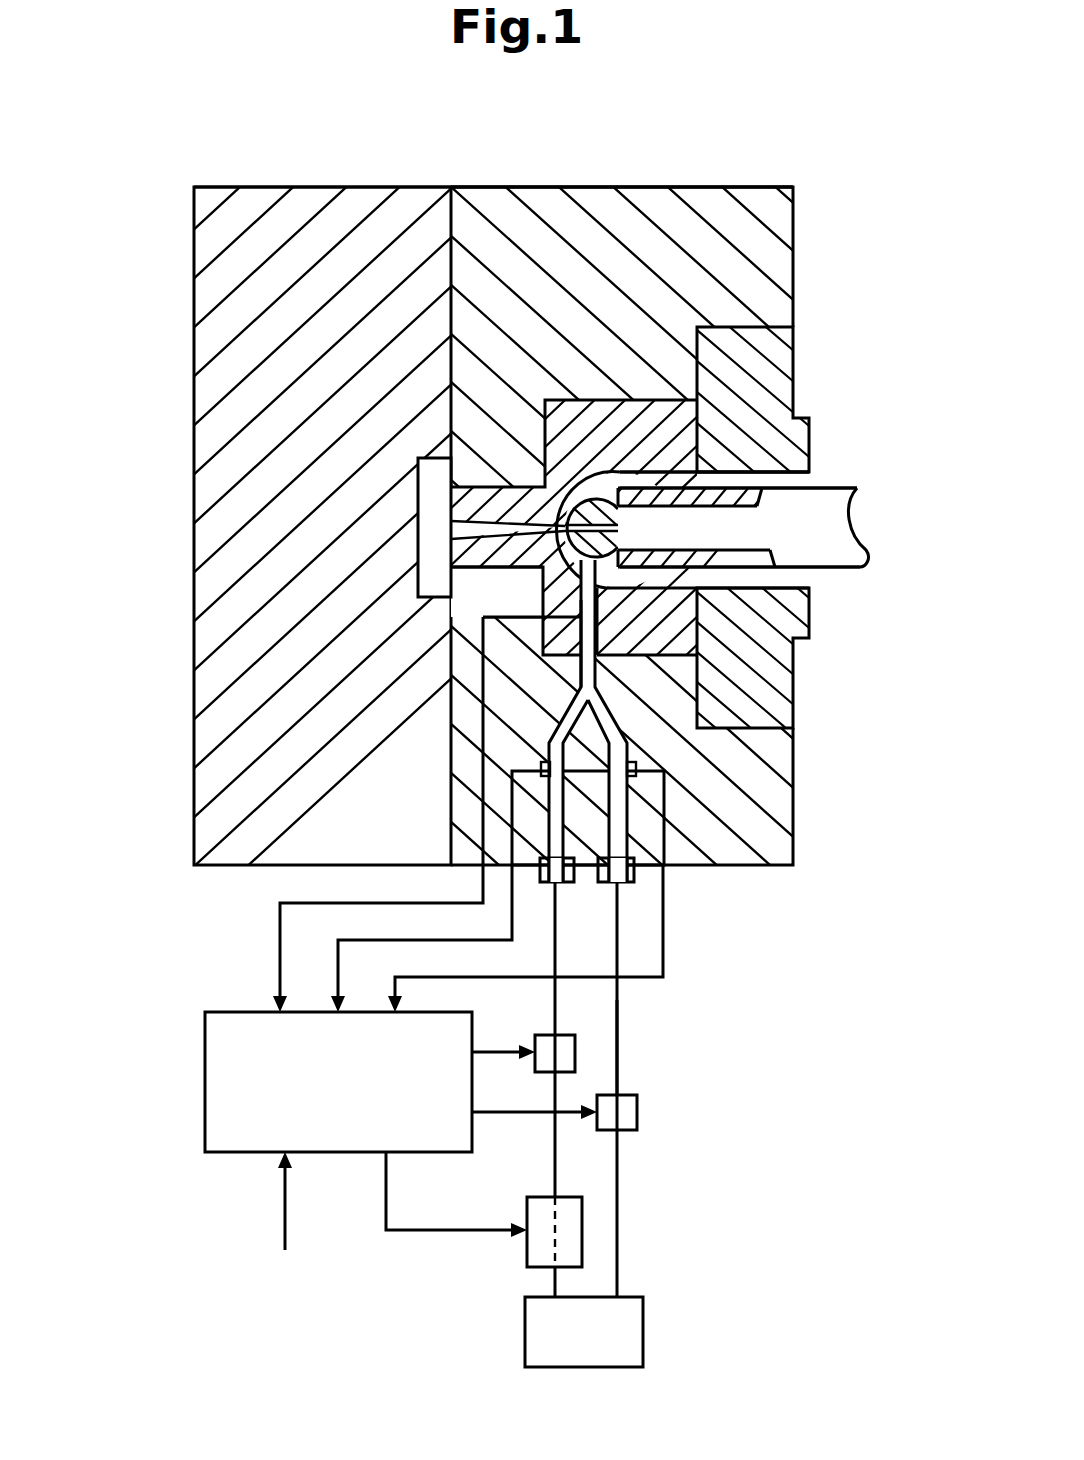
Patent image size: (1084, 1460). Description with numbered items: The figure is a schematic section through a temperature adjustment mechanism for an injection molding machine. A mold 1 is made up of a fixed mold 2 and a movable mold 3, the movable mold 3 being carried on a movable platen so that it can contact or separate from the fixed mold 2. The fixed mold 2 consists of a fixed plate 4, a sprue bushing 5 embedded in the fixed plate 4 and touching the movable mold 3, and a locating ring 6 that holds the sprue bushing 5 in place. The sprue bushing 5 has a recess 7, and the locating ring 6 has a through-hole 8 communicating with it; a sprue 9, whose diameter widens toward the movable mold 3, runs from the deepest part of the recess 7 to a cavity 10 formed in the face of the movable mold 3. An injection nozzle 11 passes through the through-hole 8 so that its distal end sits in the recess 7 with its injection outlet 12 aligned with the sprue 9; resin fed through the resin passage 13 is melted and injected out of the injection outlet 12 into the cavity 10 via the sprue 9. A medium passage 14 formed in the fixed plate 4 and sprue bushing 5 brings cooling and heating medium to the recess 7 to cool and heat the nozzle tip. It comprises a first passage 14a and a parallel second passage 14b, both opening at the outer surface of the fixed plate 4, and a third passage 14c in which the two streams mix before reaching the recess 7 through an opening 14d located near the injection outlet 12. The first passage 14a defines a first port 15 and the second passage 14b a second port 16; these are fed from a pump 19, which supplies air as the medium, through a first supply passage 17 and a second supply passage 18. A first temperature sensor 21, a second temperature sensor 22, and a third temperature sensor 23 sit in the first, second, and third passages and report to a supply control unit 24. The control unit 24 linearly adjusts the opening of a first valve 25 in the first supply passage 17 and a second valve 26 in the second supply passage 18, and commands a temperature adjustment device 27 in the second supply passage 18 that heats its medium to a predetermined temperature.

The mold 1 is at (483, 128).
The fixed mold 2 is at (492, 187).
The movable mold 3 is at (416, 187).
The fixed plate 4 is at (793, 263).
The sprue bushing 5 is at (603, 410).
The locating ring 6 is at (793, 365).
The recess 7 is at (636, 478).
The through-hole 8 is at (796, 471).
The sprue 9 is at (468, 522).
The cavity 10 is at (426, 504).
The injection nozzle 11 is at (836, 518).
The injection outlet 12 is at (620, 527).
The resin passage 13 is at (705, 508).
The medium passage 14 is at (627, 816).
The first passage 14a is at (620, 843).
The second passage 14b is at (560, 843).
The third passage 14c is at (580, 672).
The opening 14d is at (600, 590).
The first port 15 is at (638, 882).
The second port 16 is at (578, 882).
The first supply passage 17 is at (617, 1016).
The second supply passage 18 is at (555, 998).
The pump 19 is at (535, 1330).
The first temperature sensor 21 is at (632, 762).
The second temperature sensor 22 is at (544, 762).
The third temperature sensor 23 is at (572, 609).
The supply control unit 24 is at (205, 1078).
The first valve 25 is at (637, 1112).
The second valve 26 is at (545, 1062).
The temperature adjustment device 27 is at (537, 1216).